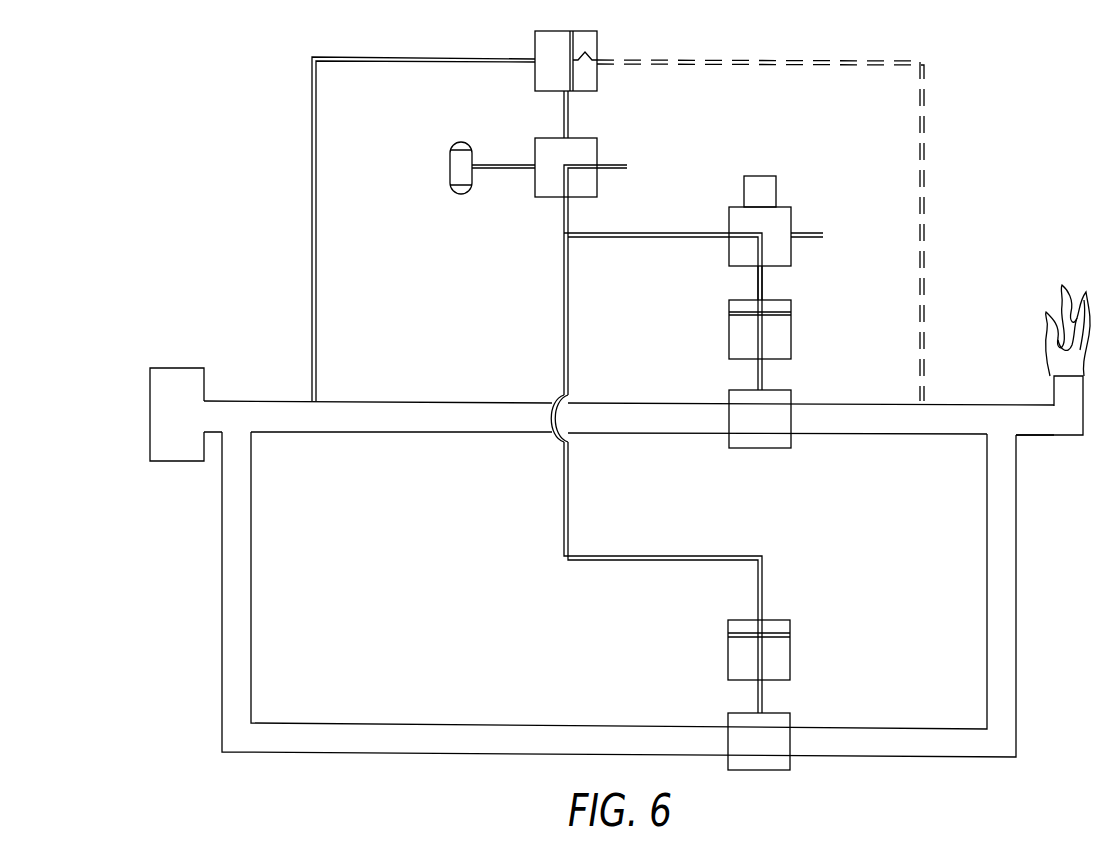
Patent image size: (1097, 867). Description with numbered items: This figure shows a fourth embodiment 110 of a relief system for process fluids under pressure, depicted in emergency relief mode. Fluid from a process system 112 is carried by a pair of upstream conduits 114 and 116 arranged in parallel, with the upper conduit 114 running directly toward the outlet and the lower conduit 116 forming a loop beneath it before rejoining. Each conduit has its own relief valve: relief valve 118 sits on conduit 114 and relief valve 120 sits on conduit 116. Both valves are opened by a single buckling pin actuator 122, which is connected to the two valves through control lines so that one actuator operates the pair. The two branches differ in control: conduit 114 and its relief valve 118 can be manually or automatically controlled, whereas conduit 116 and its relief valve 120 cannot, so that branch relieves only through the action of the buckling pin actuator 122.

The fourth embodiment of relief system 110 is at (166, 84).
The process system 112 is at (177, 368).
The upstream conduit 114 is at (375, 431).
The upstream conduit 116 is at (328, 752).
The relief valve 118 is at (758, 448).
The relief valve 120 is at (752, 770).
The buckling pin actuator 122 is at (583, 31).